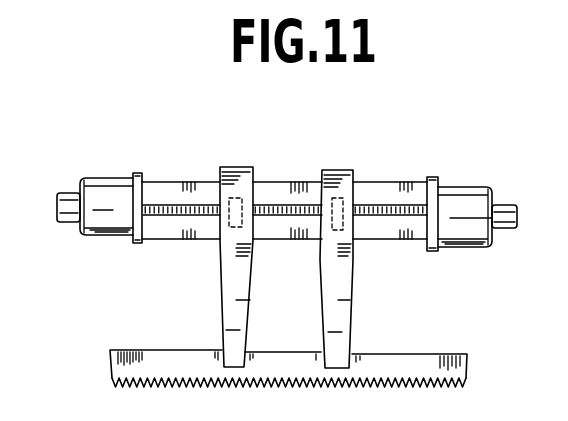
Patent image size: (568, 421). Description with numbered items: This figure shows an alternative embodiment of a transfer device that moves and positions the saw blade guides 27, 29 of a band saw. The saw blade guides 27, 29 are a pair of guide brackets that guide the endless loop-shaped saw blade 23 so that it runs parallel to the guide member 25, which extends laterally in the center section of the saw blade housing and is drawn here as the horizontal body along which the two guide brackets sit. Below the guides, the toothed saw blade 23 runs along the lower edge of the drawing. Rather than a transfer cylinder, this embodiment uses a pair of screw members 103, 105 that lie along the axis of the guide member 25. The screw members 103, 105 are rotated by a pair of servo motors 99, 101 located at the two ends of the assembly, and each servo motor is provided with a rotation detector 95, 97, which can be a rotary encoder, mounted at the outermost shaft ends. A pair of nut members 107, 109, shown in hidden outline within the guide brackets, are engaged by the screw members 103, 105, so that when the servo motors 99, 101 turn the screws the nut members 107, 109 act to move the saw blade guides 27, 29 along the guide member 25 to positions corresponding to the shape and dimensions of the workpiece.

The saw blade 23 is at (433, 356).
The guide member 25 is at (277, 182).
The saw blade guide 27 is at (340, 170).
The saw blade guide 29 is at (230, 167).
The rotation detector 95 is at (508, 205).
The rotation detector 97 is at (65, 222).
The servo motor 99 is at (467, 195).
The servo motor 101 is at (104, 178).
The screw member 103 is at (398, 223).
The screw member 105 is at (182, 223).
The nut member 107 is at (343, 230).
The nut member 109 is at (243, 227).